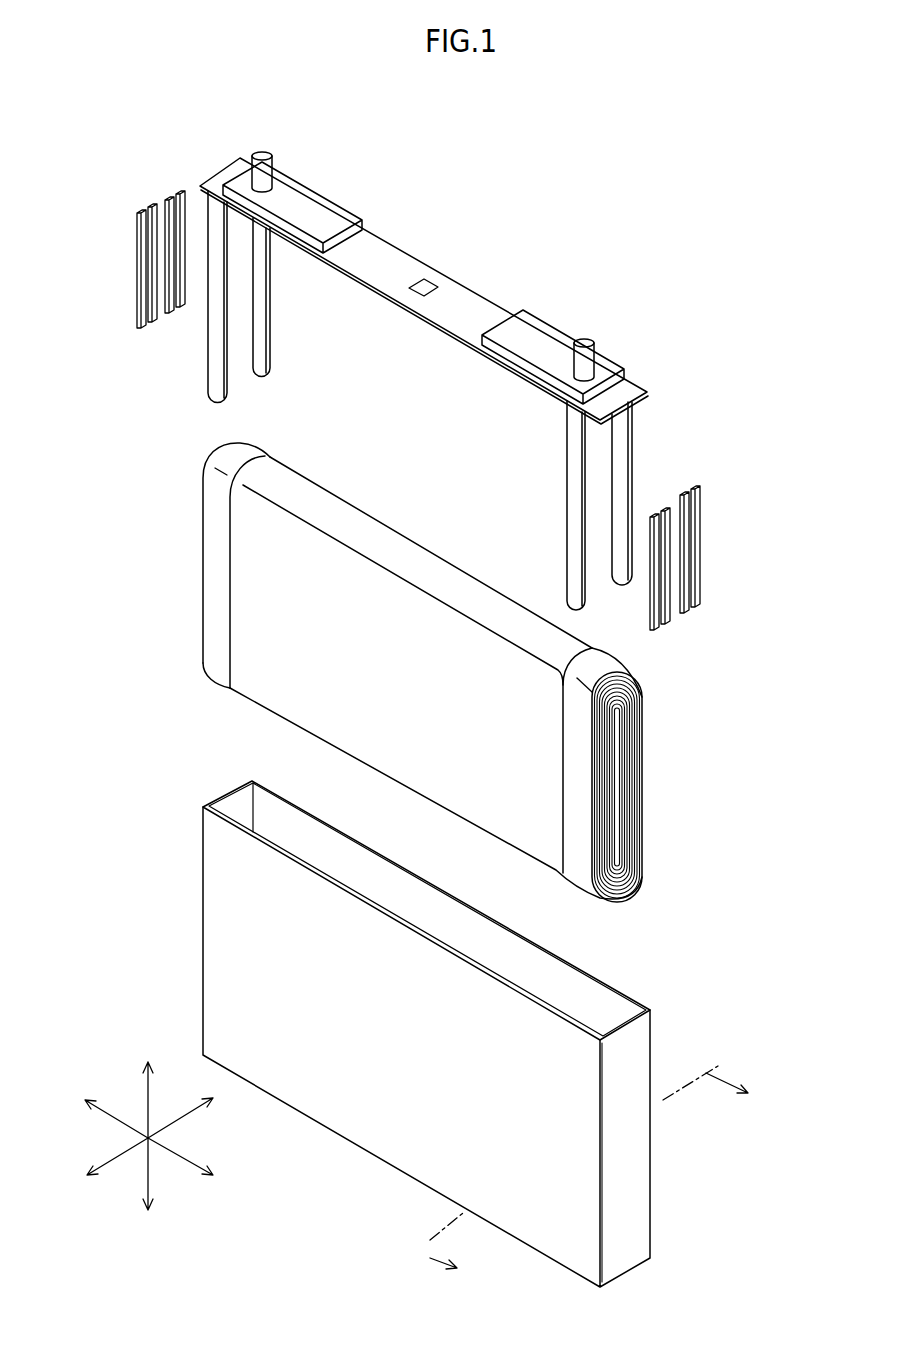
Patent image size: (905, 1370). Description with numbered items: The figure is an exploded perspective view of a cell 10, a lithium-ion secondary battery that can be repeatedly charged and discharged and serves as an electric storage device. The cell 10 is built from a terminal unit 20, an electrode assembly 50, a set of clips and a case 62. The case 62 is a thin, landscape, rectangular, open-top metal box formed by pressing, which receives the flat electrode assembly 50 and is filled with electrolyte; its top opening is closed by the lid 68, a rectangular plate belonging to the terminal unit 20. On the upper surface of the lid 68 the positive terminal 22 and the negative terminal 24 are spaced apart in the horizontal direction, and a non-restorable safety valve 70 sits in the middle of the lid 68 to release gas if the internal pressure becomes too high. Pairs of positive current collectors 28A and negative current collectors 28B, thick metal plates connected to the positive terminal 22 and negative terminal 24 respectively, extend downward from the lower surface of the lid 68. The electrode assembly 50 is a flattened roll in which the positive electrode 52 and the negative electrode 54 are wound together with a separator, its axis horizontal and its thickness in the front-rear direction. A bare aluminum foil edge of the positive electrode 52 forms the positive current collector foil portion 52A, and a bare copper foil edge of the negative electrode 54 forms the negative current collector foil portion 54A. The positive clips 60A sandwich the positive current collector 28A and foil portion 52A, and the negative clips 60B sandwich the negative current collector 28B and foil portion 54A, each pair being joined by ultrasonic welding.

The cell 10 is at (796, 153).
The terminal unit 20 is at (457, 212).
The positive terminal 22 is at (287, 156).
The negative terminal 24 is at (620, 340).
The positive current collectors 28A is at (262, 357).
The negative current collectors 28B is at (628, 448).
The electrode assembly 50 is at (664, 774).
The positive electrode 52 is at (156, 565).
The positive current collector foil portion 52A is at (207, 492).
The negative electrode 54 is at (665, 787).
The negative current collector foil portion 54A is at (573, 708).
The positive clips 60A is at (165, 205).
The negative clips 60B is at (697, 517).
The case 62 is at (695, 1161).
The lid 68 is at (465, 300).
The safety valve 70 is at (412, 293).